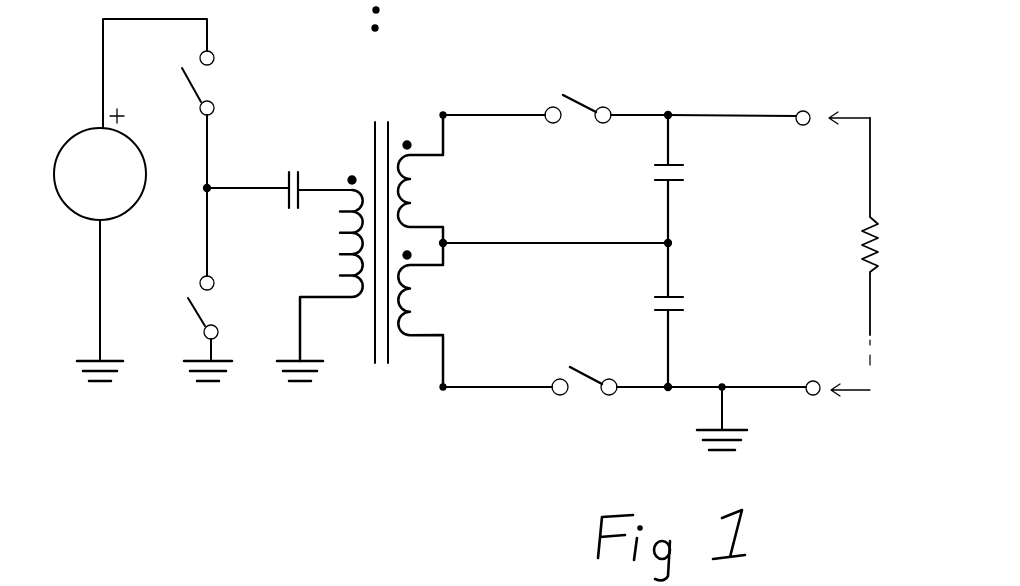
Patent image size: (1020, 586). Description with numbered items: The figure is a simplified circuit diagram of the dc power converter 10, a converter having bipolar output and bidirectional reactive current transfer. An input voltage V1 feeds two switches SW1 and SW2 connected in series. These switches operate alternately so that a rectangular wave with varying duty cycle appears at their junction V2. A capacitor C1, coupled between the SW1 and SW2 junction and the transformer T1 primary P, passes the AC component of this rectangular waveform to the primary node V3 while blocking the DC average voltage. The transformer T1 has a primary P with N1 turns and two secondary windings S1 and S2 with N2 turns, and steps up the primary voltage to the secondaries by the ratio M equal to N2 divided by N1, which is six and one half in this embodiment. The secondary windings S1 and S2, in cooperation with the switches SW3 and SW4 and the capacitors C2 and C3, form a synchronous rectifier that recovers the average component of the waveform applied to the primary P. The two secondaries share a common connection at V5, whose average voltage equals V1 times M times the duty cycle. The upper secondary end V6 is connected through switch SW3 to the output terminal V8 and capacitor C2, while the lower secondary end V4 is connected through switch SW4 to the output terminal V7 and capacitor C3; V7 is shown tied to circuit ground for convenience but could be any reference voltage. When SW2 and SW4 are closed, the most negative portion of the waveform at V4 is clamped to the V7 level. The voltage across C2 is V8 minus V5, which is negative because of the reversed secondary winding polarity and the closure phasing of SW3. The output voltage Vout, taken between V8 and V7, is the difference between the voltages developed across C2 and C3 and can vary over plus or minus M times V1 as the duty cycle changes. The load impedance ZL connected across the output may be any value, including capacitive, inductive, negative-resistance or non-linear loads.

The dc power converter 10 is at (146, 480).
The input voltage V1 is at (112, 196).
The rectangular wave node V2 is at (203, 188).
The transformer primary node V3 is at (360, 160).
The lower secondary end voltage V4 is at (446, 389).
The secondary common connection voltage V5 is at (672, 243).
The upper secondary end voltage V6 is at (440, 112).
The output voltage terminal V7 is at (817, 396).
The output voltage terminal V8 is at (795, 112).
The output voltage Vout is at (807, 254).
The switch SW1 is at (223, 284).
The switch SW2 is at (229, 119).
The switch SW3 is at (606, 90).
The switch SW4 is at (633, 410).
The capacitor C1 is at (320, 183).
The capacitor C2 is at (678, 178).
The capacitor C3 is at (677, 315).
The transformer T1 is at (374, 225).
The primary P is at (320, 285).
The secondary winding S1 is at (422, 179).
The secondary winding S2 is at (422, 315).
The primary turns N1 is at (341, 22).
The secondary turns N2 is at (403, 22).
The load impedance ZL is at (884, 241).